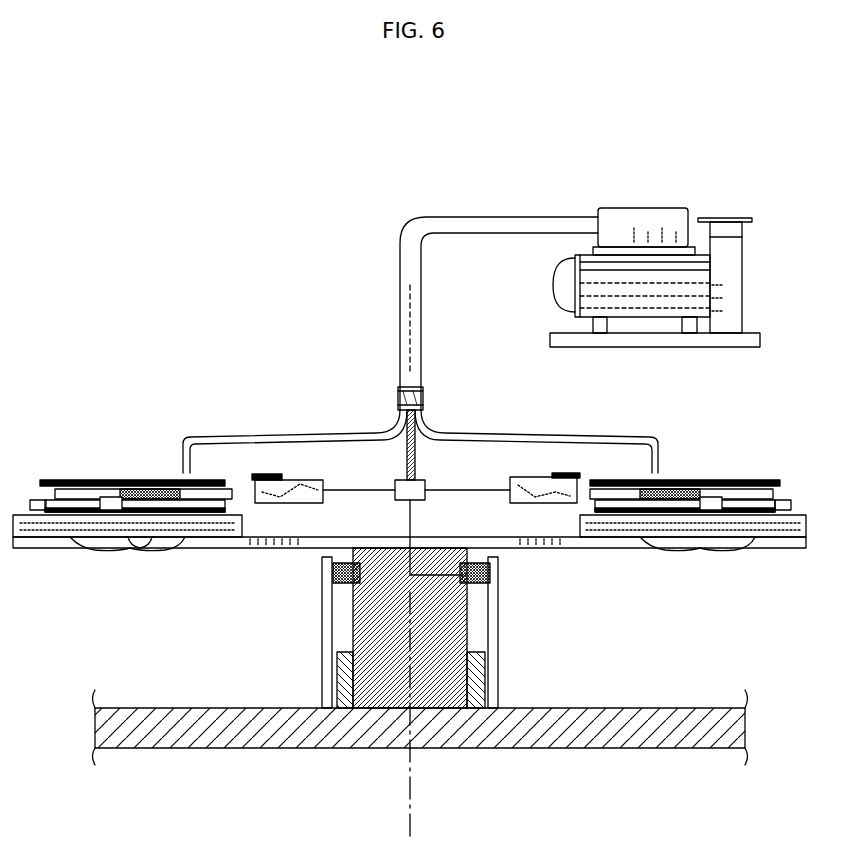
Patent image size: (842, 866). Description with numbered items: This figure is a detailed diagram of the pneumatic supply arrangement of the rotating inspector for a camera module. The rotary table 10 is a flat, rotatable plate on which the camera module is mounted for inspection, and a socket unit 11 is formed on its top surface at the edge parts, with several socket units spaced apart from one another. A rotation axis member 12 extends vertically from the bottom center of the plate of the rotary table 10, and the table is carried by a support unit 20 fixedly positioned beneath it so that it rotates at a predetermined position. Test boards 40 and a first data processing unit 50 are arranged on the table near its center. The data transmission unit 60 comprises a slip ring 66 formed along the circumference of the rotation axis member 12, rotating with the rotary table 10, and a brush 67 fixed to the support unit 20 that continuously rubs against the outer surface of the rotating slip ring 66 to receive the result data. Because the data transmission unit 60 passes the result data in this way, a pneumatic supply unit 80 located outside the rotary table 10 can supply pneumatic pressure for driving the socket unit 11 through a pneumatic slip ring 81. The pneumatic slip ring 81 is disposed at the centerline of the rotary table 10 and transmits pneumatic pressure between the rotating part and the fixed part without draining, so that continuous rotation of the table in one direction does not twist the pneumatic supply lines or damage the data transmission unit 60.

The rotary table 10 is at (752, 549).
The socket unit 11 is at (97, 480).
The rotation axis member 12 is at (460, 636).
The support unit 20 is at (675, 716).
The test board 40 is at (531, 476).
The first data processing unit 50 is at (420, 478).
The data transmission unit 60 is at (508, 585).
The slip ring 66 is at (348, 583).
The brush 67 is at (331, 568).
The pneumatic supply unit 80 is at (707, 196).
The pneumatic slip ring 81 is at (398, 397).